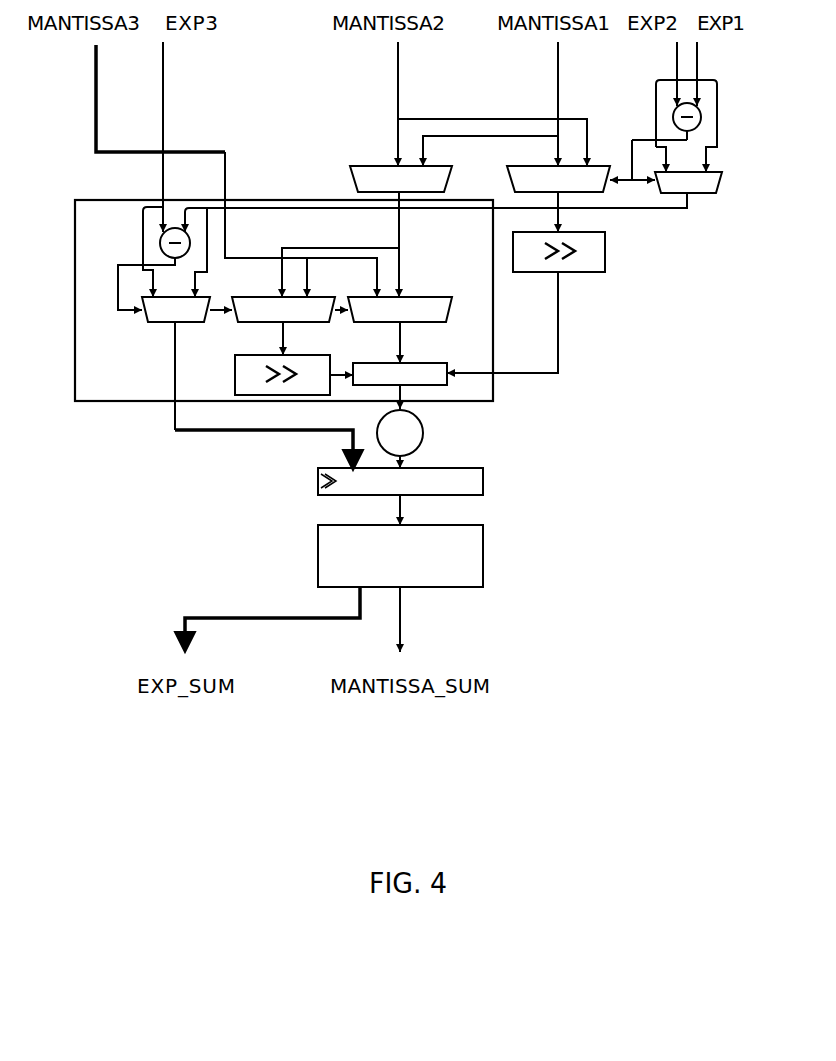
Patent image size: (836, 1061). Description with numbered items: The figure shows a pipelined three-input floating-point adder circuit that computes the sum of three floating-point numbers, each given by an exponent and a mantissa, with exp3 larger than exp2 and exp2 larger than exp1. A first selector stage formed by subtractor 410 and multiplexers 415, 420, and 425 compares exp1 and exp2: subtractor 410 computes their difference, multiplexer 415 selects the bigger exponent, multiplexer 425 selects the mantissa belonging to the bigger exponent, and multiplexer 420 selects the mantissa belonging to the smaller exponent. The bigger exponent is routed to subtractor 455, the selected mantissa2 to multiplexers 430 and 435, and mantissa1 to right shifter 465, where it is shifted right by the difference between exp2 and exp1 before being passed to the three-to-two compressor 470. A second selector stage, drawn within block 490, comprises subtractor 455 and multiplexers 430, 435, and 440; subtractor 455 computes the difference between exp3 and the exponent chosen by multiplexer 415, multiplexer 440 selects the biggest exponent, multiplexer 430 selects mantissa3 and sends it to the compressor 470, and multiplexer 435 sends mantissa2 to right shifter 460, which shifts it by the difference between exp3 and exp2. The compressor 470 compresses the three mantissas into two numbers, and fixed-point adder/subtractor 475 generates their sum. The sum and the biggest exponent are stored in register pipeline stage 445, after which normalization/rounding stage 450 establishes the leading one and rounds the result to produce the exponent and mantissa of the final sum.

The subtractor 410 is at (701, 121).
The multiplexer 415 is at (672, 190).
The multiplexer 420 is at (542, 189).
The multiplexer 425 is at (384, 189).
The multiplexer 430 is at (384, 320).
The multiplexer 435 is at (267, 320).
The multiplexer 440 is at (160, 320).
The register pipeline stage 445 is at (384, 491).
The normalization/rounding stage 450 is at (384, 571).
The subtractor 455 is at (158, 246).
The right shifter 460 is at (260, 357).
The right shifter 465 is at (607, 252).
The 3-2 compressor 470 is at (418, 363).
The fixed-point adder/subtractor 475 is at (424, 431).
The alignment block 490 is at (138, 200).